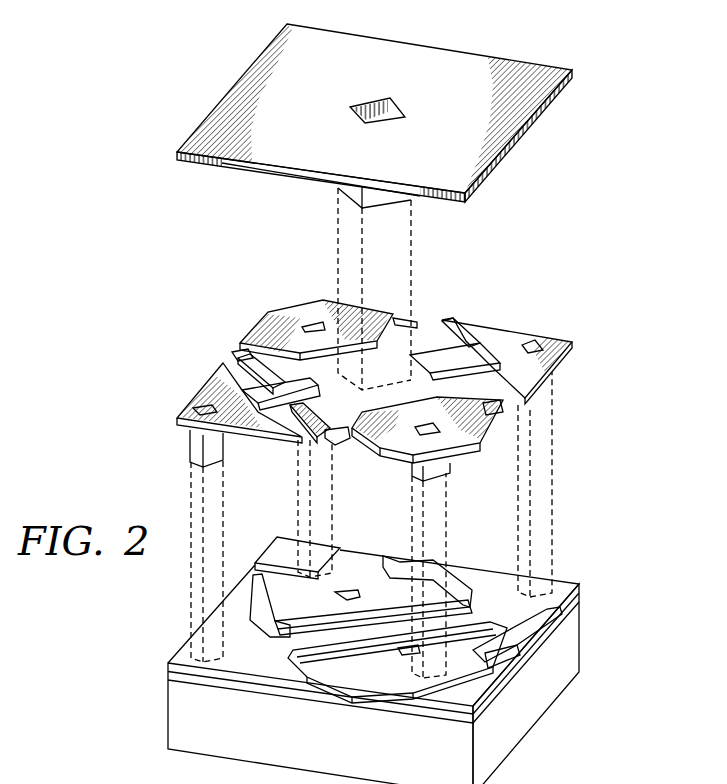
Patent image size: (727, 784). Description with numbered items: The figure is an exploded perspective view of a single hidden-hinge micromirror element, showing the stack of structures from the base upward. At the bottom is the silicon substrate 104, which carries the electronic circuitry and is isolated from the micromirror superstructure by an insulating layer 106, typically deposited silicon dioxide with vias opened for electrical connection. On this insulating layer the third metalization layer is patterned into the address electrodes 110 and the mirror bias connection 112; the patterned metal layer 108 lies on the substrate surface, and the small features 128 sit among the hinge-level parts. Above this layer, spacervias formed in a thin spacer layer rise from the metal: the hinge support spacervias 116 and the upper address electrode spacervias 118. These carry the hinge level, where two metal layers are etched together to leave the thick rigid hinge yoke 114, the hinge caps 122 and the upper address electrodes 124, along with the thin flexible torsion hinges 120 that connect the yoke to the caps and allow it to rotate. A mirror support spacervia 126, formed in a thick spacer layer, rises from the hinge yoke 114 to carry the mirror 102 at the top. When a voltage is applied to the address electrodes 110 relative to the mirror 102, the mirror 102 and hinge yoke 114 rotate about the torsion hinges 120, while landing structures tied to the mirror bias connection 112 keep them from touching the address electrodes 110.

The mirror 102 is at (423, 56).
The silicon substrate 104 is at (523, 708).
The insulating layer 106 is at (167, 675).
The conductive pattern 108 is at (336, 590).
The address electrode 110 is at (284, 575).
The mirror bias connection 112 is at (183, 653).
The hinge yoke 114 is at (422, 325).
The hinge support spacervia 116 is at (193, 443).
The upper address electrode spacervia 118 is at (438, 467).
The torsion hinge 120 is at (238, 357).
The hinge cap 122 is at (215, 388).
The upper address electrode 124 is at (310, 311).
The mirror support spacervia 126 is at (384, 196).
The connector block 128 is at (510, 404).